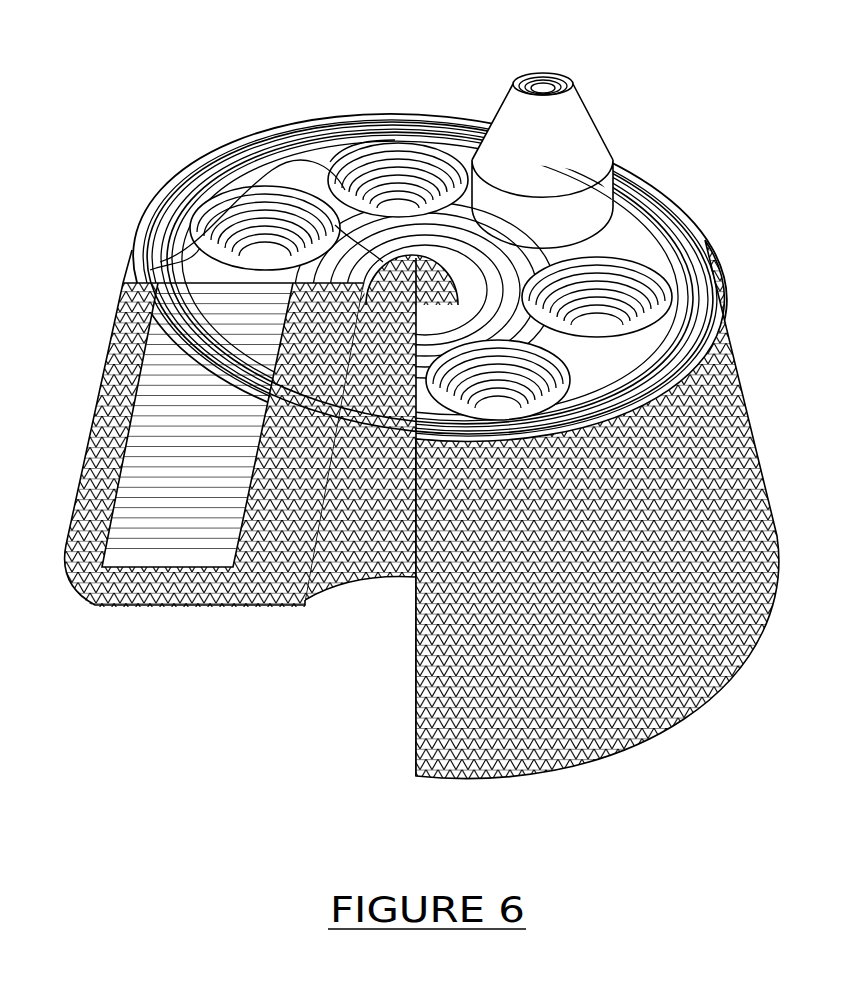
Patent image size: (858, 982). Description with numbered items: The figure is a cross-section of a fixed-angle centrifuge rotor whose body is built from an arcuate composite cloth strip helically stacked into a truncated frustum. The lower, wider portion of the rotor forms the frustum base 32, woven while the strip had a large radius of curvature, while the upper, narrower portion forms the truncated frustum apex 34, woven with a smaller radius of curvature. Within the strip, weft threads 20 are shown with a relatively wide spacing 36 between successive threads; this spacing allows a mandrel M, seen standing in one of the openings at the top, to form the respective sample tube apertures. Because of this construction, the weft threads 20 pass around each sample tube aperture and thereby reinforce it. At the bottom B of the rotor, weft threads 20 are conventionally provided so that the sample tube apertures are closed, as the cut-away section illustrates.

The weft threads 20 is at (697, 245).
The frustum base 32 is at (710, 690).
The truncated frustum apex 34 is at (700, 243).
The wide spacing 36 is at (287, 170).
The bottom B is at (162, 608).
The mandrel M is at (600, 122).